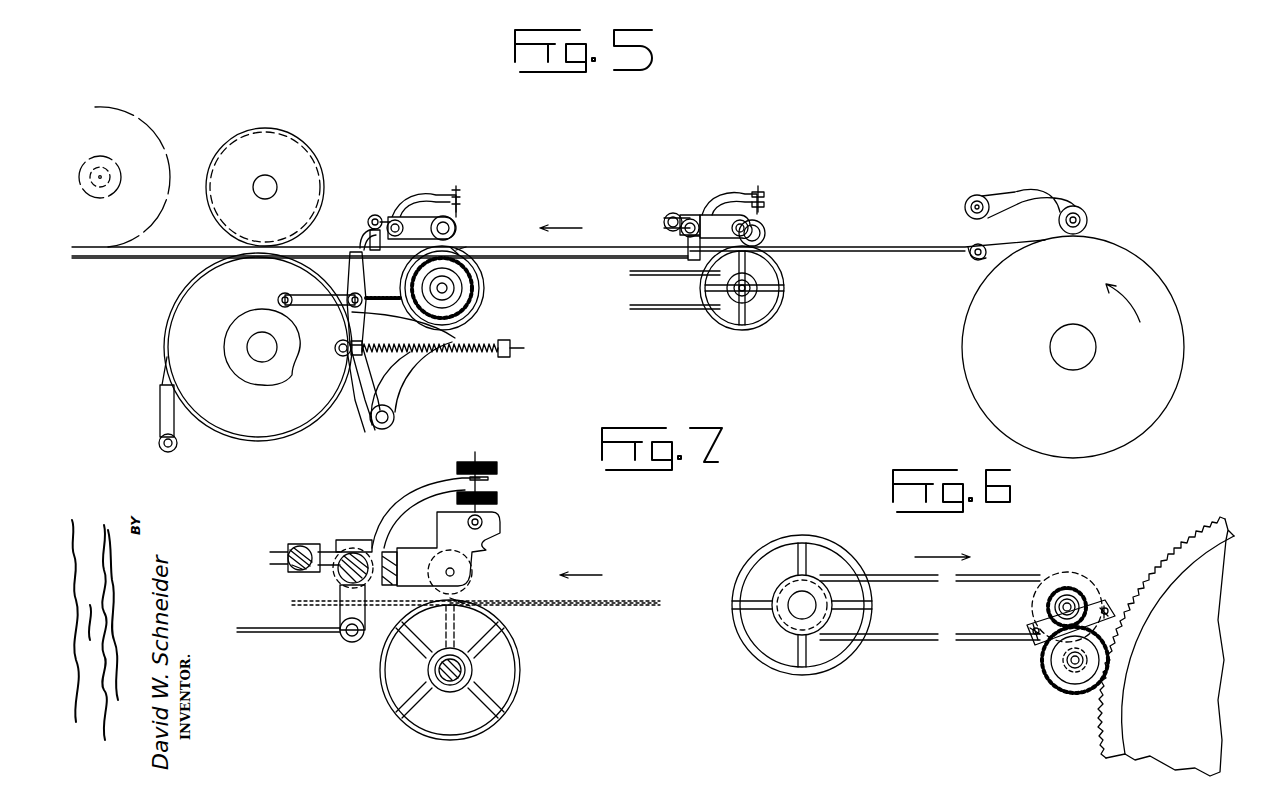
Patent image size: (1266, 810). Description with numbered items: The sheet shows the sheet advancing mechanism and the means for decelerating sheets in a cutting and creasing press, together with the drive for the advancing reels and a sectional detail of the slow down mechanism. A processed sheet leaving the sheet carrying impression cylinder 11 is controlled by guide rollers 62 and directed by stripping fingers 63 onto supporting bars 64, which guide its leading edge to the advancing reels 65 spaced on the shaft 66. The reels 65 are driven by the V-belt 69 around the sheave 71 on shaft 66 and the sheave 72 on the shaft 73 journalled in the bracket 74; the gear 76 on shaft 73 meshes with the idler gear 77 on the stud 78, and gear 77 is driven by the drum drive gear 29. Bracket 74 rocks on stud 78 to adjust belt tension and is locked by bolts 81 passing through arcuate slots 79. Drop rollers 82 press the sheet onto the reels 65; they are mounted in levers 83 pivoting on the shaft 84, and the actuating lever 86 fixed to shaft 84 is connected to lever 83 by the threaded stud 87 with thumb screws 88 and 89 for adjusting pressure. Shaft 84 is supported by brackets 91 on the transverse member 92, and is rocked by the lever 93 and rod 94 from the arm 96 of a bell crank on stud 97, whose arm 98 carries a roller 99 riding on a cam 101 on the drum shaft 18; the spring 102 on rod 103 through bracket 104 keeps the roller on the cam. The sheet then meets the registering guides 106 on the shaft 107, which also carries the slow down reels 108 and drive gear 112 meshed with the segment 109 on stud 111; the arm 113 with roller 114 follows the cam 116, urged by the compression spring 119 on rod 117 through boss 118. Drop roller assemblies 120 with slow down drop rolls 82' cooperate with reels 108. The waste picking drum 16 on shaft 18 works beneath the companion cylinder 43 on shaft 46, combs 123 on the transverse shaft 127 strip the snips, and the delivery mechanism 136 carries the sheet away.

In FIG. 5, the sheet carrying impression cylinder 11 is at (1142, 258).
In FIG. 5, the waste picking drum 16 is at (183, 284).
In FIG. 5, the supporting shaft 18 is at (262, 350).
In FIG. 6, the gear 29 is at (1100, 740).
In FIG. 5, the companion or female cylinder 43 is at (296, 138).
In FIG. 5, the supporting shaft 46 is at (262, 185).
In FIG. 5, the guide rollers 62 is at (1085, 210).
In FIG. 5, the stripping fingers 63 is at (1000, 243).
In FIG. 5, the supporting bars 64 is at (845, 247).
In FIG. 7, the supporting bars 64 is at (572, 610).
In FIG. 5, the advancing reels 65 is at (784, 289).
In FIG. 6, the advancing reels 65 is at (828, 666).
In FIG. 5, the shaft 66 is at (752, 292).
In FIG. 6, the shaft 66 is at (800, 604).
In FIG. 5, the V-belt 69 is at (655, 303).
In FIG. 6, the V-belt 69 is at (884, 572).
In FIG. 5, the sheave 71 is at (758, 298).
In FIG. 6, the sheave 71 is at (786, 630).
In FIG. 6, the sheave 72 is at (1080, 582).
In FIG. 6, the shaft 73 is at (1066, 596).
In FIG. 6, the bracket 74 is at (1105, 606).
In FIG. 6, the gear 76 is at (1056, 600).
In FIG. 6, the idler gear 77 is at (1046, 668).
In FIG. 6, the stud 78 is at (1072, 664).
In FIG. 6, the arcuate slots 79 is at (1110, 618).
In FIG. 6, the bolts 81 is at (1106, 612).
In FIG. 5, the drop rollers 82 is at (760, 223).
In FIG. 7, the drop rollers 82 is at (453, 549).
In FIG. 5, the slow down drop rolls 82' is at (466, 218).
In FIG. 5, the levers 83 is at (762, 222).
In FIG. 7, the levers 83 is at (462, 545).
In FIG. 5, the shaft 84 is at (696, 220).
In FIG. 7, the shaft 84 is at (346, 553).
In FIG. 5, the actuating lever 86 is at (732, 200).
In FIG. 7, the actuating lever 86 is at (390, 502).
In FIG. 5, the threaded stud 87 is at (762, 192).
In FIG. 7, the threaded stud 87 is at (478, 456).
In FIG. 5, the thumb screw 88 is at (766, 196).
In FIG. 7, the thumb screw 88 is at (498, 468).
In FIG. 5, the thumb screw 89 is at (766, 204).
In FIG. 7, the thumb screw 89 is at (498, 497).
In FIG. 5, the brackets 91 is at (678, 214).
In FIG. 7, the brackets 91 is at (312, 548).
In FIG. 5, the transverse member 92 is at (668, 216).
In FIG. 7, the transverse member 92 is at (290, 550).
In FIG. 5, the lever 93 is at (686, 243).
In FIG. 7, the lever 93 is at (364, 640).
In FIG. 5, the rod 94 is at (598, 262).
In FIG. 7, the rod 94 is at (268, 636).
In FIG. 5, the arm 96 is at (366, 276).
In FIG. 5, the stud 97 is at (348, 262).
In FIG. 5, the arm 98 is at (315, 306).
In FIG. 5, the roller 99 is at (282, 295).
In FIG. 5, the cam 101 is at (225, 334).
In FIG. 5, the spring 102 is at (366, 248).
In FIG. 5, the rod 103 is at (362, 246).
In FIG. 5, the bracket 104 is at (380, 220).
In FIG. 5, the registering guides 106 is at (458, 250).
In FIG. 7, the registering guides 106 is at (462, 602).
In FIG. 5, the supporting shaft 107 is at (446, 288).
In FIG. 7, the supporting shaft 107 is at (462, 672).
In FIG. 5, the sheet slow down reels 108 is at (485, 305).
In FIG. 7, the sheet slow down reels 108 is at (506, 692).
In FIG. 5, the segment 109 is at (458, 337).
In FIG. 5, the stud 111 is at (395, 416).
In FIG. 5, the slow down reel drive gear 112 is at (472, 293).
In FIG. 5, the arm 113 is at (378, 414).
In FIG. 5, the roller 114 is at (355, 402).
In FIG. 5, the cam 116 is at (338, 380).
In FIG. 5, the rod 117 is at (522, 350).
In FIG. 5, the boss 118 is at (506, 358).
In FIG. 5, the compression spring 119 is at (455, 352).
In FIG. 5, the drop roller assemblies 120 is at (440, 215).
In FIG. 5, the combs 123 is at (160, 402).
In FIG. 5, the transverse shaft 127 is at (172, 450).
In FIG. 5, the delivery mechanism 136 is at (160, 140).